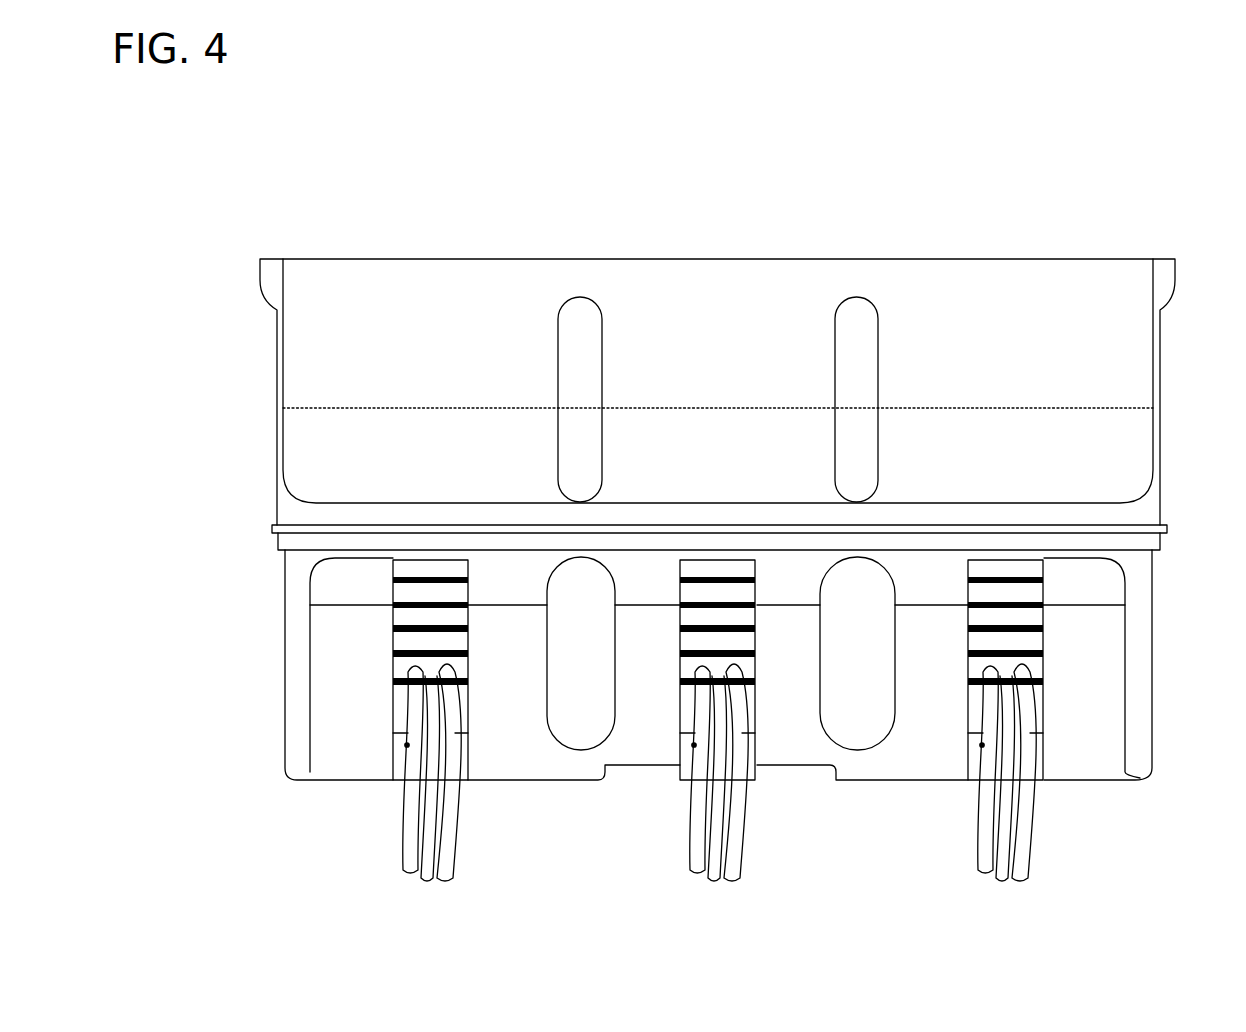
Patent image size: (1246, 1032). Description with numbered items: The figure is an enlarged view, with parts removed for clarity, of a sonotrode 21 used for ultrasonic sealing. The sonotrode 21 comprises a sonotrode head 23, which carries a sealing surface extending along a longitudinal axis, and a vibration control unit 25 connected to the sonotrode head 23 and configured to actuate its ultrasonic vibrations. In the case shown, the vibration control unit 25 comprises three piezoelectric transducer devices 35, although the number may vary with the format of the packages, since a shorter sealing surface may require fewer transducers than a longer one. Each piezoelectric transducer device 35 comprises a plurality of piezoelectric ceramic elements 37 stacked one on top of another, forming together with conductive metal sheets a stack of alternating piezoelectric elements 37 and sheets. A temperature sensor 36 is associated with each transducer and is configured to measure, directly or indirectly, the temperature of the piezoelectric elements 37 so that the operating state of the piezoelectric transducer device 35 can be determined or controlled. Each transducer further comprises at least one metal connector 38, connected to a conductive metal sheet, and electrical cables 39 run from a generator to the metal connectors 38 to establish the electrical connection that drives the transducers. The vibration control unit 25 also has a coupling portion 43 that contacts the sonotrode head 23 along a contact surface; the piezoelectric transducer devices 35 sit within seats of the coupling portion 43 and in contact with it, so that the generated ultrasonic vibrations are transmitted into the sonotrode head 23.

The sonotrode 21 is at (680, 513).
The sonotrode head 23 is at (285, 357).
The vibration control unit 25 is at (1108, 841).
The piezoelectric transducer device 35 is at (407, 748).
The temperature sensor 36 is at (391, 690).
The piezoelectric element 37 is at (393, 597).
The metal connector 38 is at (458, 605).
The electrical cable 39 is at (443, 805).
The coupling portion 43 is at (280, 650).